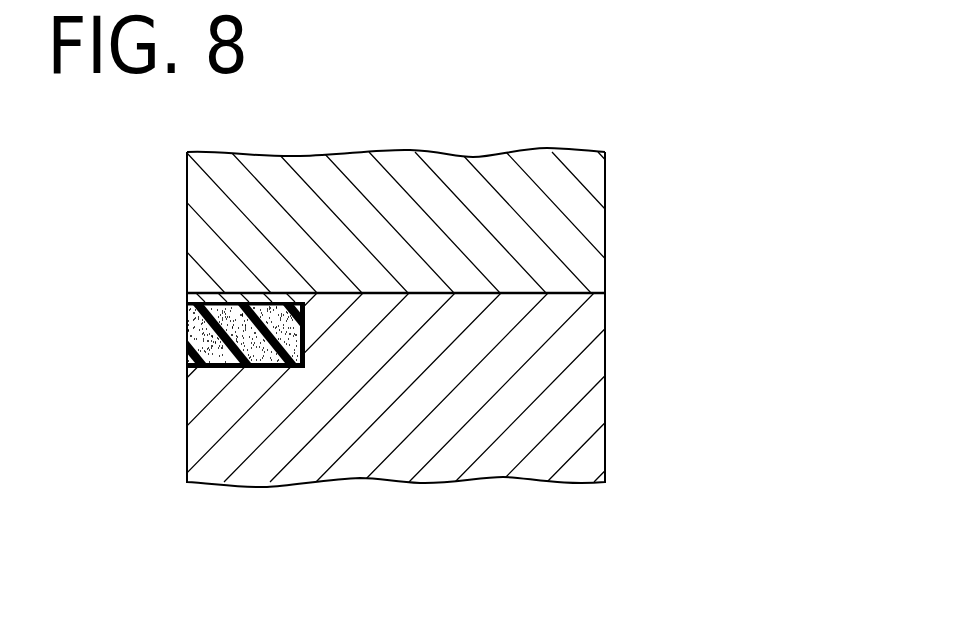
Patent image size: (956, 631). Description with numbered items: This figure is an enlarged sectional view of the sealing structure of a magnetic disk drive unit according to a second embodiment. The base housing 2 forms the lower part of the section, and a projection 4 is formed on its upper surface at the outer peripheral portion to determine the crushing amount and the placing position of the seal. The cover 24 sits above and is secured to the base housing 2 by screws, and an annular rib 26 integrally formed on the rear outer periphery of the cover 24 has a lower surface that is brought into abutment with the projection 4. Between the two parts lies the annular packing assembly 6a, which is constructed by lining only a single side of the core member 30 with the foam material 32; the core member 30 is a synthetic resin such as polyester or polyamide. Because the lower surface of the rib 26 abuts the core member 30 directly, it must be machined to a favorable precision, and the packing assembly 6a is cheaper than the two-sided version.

The base housing 2 is at (385, 486).
The projections 4 is at (463, 465).
The cover 24 is at (403, 151).
The annular rib 26 is at (508, 170).
The annular packing assembly 6a is at (181, 333).
The core member 30 is at (187, 293).
The foam material 32 is at (183, 357).